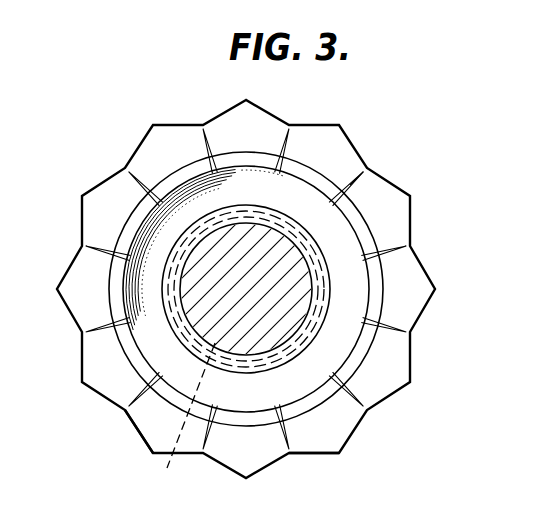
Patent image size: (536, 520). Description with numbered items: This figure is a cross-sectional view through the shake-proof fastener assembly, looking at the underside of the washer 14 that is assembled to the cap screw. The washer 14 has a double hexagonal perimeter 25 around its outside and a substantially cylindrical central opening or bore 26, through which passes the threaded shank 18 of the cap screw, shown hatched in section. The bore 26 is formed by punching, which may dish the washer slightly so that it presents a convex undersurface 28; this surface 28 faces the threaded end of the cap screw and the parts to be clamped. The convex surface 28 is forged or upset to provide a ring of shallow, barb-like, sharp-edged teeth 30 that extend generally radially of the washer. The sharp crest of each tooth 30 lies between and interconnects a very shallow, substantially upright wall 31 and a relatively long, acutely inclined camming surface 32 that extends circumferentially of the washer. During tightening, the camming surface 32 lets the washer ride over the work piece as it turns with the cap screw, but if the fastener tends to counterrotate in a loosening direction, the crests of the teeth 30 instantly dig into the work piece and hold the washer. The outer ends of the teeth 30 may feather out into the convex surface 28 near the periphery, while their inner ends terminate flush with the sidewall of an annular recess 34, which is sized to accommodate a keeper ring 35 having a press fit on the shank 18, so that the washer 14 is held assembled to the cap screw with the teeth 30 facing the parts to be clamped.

The washer 14 is at (86, 398).
The shank of cap screw 18 is at (198, 320).
The double hexagonal perimeter 25 is at (313, 455).
The central opening or bore 26 is at (187, 416).
The convex undersurface 28 is at (153, 423).
The teeth 30 is at (203, 137).
The upright wall 31 is at (351, 189).
The camming surface 32 is at (128, 200).
The annular recess 34 is at (142, 295).
The keeper ring 35 is at (158, 278).